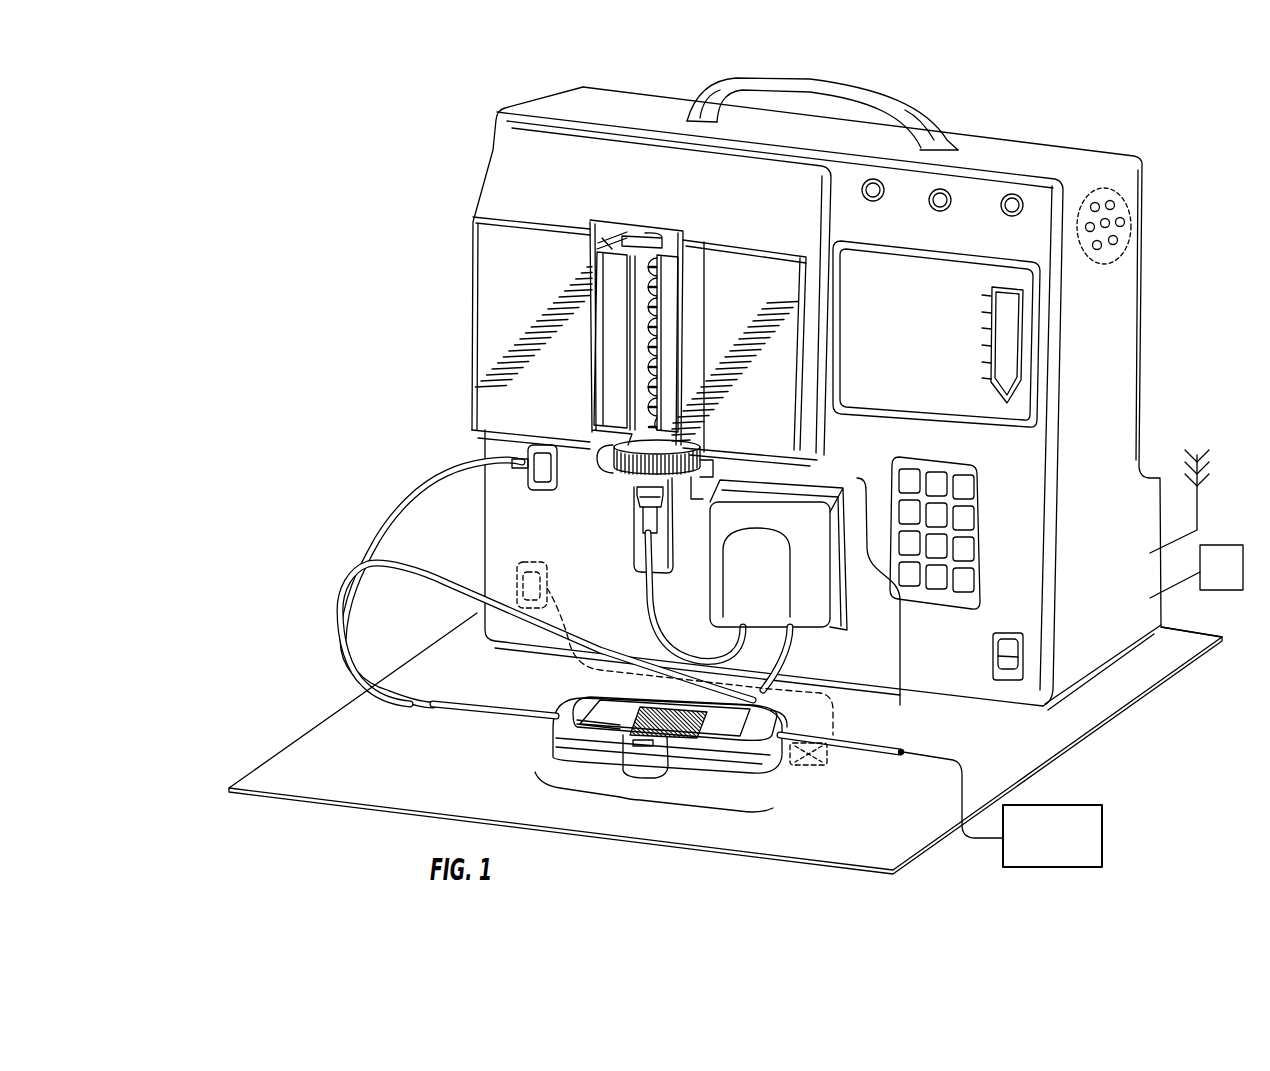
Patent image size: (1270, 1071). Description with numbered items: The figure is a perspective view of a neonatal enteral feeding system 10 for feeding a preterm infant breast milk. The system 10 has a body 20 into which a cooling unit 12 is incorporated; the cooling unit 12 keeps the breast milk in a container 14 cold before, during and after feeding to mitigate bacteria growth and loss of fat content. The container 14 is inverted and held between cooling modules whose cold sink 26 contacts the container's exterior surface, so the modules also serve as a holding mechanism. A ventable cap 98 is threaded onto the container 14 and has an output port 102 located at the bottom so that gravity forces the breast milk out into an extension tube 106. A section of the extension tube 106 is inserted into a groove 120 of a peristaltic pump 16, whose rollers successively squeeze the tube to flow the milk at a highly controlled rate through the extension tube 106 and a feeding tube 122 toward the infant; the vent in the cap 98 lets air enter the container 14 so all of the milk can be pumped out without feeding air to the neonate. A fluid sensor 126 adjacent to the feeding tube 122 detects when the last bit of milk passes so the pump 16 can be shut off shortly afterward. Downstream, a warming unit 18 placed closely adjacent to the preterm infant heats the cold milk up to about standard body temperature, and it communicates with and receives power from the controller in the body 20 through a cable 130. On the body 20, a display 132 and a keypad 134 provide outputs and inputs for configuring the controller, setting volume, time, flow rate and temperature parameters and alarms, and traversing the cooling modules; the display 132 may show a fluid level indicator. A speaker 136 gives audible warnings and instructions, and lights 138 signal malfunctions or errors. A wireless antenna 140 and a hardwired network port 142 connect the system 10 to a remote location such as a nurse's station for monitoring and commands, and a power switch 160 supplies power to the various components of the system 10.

The system 10 is at (338, 737).
The cooling unit 12 is at (420, 434).
The container 14 is at (710, 242).
The peristaltic pump 16 is at (886, 605).
The warming unit 18 is at (630, 800).
The body 20 is at (1118, 399).
The cold sink 26 is at (1002, 345).
The ventable cap 98 is at (600, 457).
The output port 102 is at (637, 485).
The extension tube 106 is at (643, 600).
The groove 120 is at (770, 530).
The feeding tube 122 is at (860, 752).
The fluid sensor 126 is at (830, 768).
The cable 130 is at (398, 502).
The display 132 is at (950, 415).
The keypad 134 is at (990, 467).
The speaker 136 is at (1125, 206).
The lights 138 is at (942, 192).
The wireless antenna 140 is at (1187, 438).
The network port 142 is at (1220, 550).
The power switch 160 is at (1008, 658).